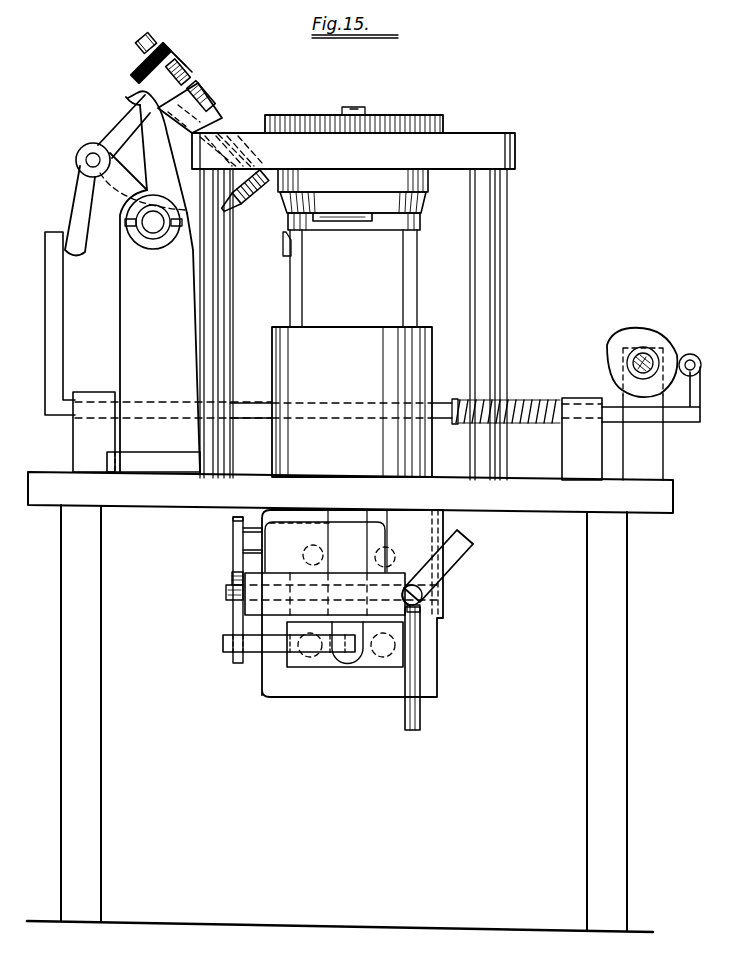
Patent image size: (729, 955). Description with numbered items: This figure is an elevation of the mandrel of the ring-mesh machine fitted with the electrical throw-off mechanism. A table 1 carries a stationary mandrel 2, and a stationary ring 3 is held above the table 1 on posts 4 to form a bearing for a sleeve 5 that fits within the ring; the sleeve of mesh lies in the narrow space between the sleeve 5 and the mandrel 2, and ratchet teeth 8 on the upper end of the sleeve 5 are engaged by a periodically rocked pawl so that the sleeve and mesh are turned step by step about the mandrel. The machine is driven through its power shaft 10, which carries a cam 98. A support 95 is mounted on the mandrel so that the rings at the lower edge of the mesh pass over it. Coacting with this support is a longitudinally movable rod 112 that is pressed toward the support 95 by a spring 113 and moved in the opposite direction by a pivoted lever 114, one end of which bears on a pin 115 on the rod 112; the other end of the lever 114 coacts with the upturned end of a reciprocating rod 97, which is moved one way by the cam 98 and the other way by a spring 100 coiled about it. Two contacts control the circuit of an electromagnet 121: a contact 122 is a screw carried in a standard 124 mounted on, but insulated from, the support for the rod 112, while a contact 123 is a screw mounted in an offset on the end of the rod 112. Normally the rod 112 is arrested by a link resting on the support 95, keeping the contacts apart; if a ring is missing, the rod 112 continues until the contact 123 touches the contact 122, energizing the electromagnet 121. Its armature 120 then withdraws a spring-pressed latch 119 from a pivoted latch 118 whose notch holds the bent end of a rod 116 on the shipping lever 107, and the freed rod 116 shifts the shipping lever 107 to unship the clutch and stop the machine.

The table 1 is at (568, 517).
The stationary mandrel 2 is at (418, 222).
The stationary ring 3 is at (487, 138).
The posts 4 is at (490, 283).
The sleeve 5 is at (425, 181).
The ratchet teeth 8 is at (447, 117).
The power shaft 10 is at (652, 358).
The support 95 is at (292, 248).
The reciprocating rod 97 is at (257, 401).
The cam 98 is at (618, 346).
The spring 100 is at (537, 400).
The shipping lever 107 is at (457, 558).
The rod 112 is at (266, 212).
The spring 113 is at (222, 190).
The pivoted lever 114 is at (113, 133).
The pin 115 is at (129, 97).
The rod 116 is at (225, 594).
The pivoted latch 118 is at (231, 578).
The spring-pressed latch 119 is at (235, 616).
The armature 120 is at (297, 665).
The electromagnet 121 is at (378, 675).
The contact 122 is at (184, 74).
The contact 123 is at (142, 38).
The standard 124 is at (208, 98).